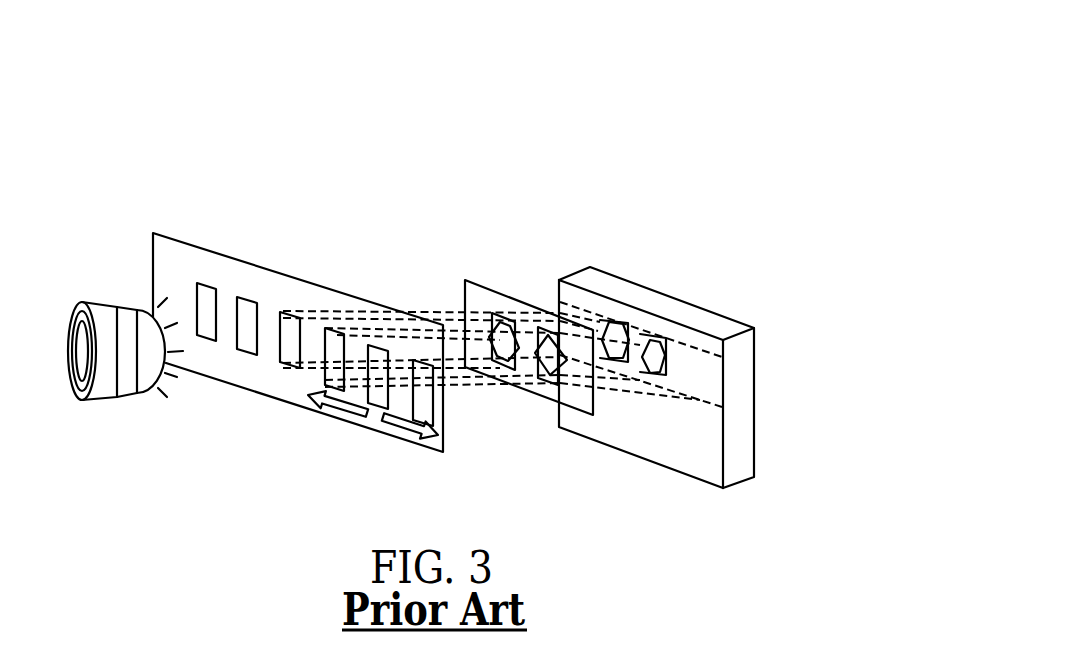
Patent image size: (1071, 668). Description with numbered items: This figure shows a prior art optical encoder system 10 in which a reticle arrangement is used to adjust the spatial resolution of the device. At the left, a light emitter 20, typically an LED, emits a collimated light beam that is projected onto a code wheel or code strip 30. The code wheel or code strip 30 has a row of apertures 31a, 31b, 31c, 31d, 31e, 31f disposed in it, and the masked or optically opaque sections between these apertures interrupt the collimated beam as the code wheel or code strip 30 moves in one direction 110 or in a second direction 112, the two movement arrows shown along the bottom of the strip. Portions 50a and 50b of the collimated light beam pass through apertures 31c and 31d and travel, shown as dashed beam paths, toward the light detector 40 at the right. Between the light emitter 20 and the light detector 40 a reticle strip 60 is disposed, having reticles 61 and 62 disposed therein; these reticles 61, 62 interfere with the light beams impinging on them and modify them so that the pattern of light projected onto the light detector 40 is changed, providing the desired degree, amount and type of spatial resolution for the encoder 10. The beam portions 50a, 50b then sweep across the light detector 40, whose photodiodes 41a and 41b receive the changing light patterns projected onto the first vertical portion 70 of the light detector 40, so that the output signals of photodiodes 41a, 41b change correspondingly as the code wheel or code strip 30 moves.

The optical encoder system 10 is at (199, 84).
The light emitter 20 is at (104, 420).
The code wheel or code strip 30 is at (257, 417).
The aperture 31a is at (205, 282).
The aperture 31b is at (243, 296).
The aperture 31c is at (288, 311).
The aperture 31d is at (332, 327).
The aperture 31e is at (375, 344).
The aperture 31f is at (420, 359).
The light detector 40 is at (685, 346).
The photodiode 41a is at (600, 319).
The photodiode 41b is at (641, 374).
The portion of collimated light beam 50a is at (540, 388).
The portion of collimated light beam 50b is at (453, 312).
The reticle strip 60 is at (494, 267).
The reticle 61 is at (515, 322).
The reticle 62 is at (565, 366).
The first vertical portion 70 is at (717, 380).
The direction of movement arrow 110 is at (337, 408).
The second direction 112 is at (400, 426).